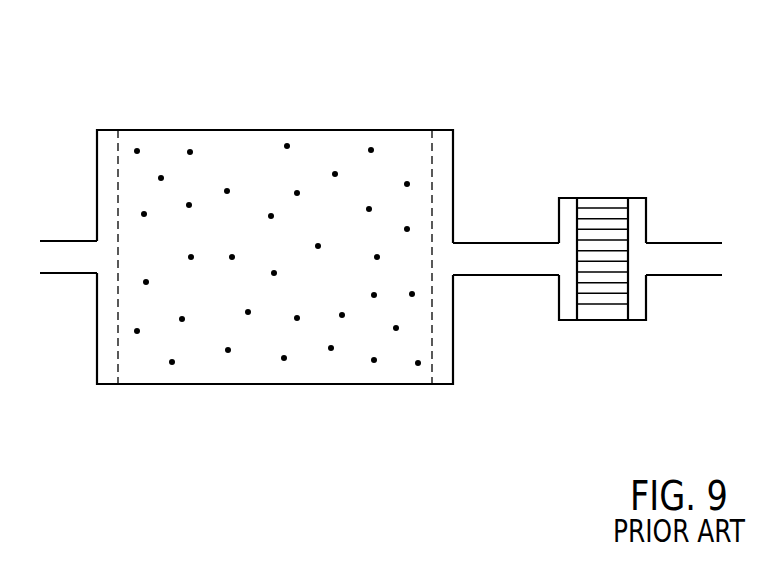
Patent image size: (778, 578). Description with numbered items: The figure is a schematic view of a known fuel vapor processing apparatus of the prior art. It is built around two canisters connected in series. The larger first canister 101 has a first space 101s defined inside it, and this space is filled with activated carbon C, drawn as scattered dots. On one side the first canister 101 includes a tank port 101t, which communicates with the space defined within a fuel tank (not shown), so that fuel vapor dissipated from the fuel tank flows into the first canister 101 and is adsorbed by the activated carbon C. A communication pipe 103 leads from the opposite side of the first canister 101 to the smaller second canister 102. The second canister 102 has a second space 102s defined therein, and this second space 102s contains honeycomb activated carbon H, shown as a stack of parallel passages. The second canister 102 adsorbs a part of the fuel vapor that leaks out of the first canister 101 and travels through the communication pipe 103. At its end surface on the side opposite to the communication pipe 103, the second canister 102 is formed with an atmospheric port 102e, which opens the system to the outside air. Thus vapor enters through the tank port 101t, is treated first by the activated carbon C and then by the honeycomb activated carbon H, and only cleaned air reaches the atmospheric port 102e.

The first canister 101 is at (236, 124).
The first space 101s is at (175, 130).
The activated carbon C is at (271, 178).
The tank port 101t is at (62, 260).
The communication pipe 103 is at (503, 260).
The second canister 102 is at (571, 195).
The honeycomb activated carbon H is at (605, 253).
The second space 102s is at (638, 214).
The atmospheric port 102e is at (683, 261).